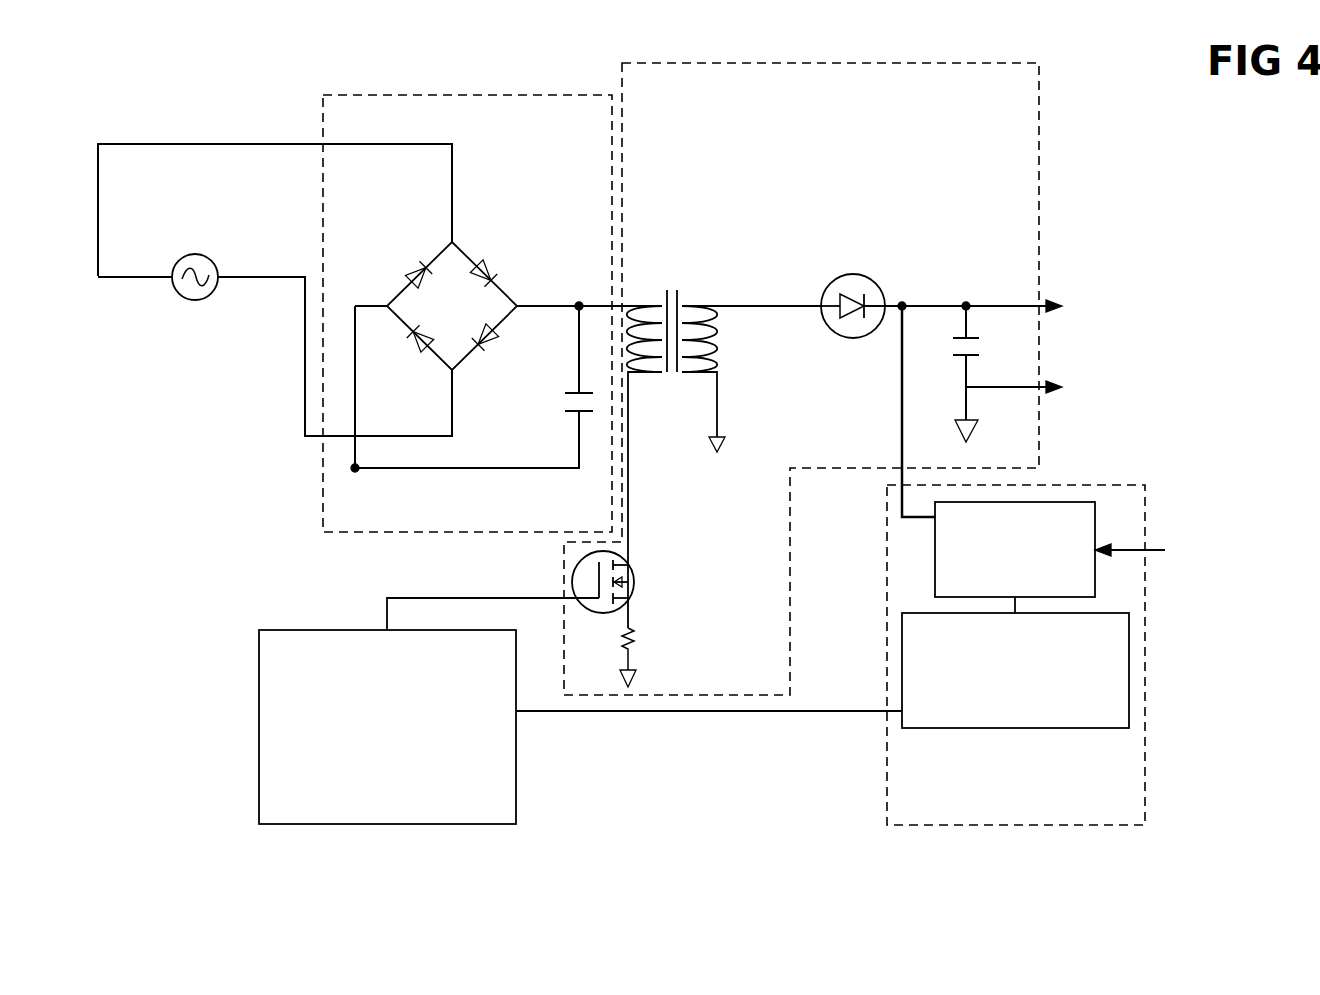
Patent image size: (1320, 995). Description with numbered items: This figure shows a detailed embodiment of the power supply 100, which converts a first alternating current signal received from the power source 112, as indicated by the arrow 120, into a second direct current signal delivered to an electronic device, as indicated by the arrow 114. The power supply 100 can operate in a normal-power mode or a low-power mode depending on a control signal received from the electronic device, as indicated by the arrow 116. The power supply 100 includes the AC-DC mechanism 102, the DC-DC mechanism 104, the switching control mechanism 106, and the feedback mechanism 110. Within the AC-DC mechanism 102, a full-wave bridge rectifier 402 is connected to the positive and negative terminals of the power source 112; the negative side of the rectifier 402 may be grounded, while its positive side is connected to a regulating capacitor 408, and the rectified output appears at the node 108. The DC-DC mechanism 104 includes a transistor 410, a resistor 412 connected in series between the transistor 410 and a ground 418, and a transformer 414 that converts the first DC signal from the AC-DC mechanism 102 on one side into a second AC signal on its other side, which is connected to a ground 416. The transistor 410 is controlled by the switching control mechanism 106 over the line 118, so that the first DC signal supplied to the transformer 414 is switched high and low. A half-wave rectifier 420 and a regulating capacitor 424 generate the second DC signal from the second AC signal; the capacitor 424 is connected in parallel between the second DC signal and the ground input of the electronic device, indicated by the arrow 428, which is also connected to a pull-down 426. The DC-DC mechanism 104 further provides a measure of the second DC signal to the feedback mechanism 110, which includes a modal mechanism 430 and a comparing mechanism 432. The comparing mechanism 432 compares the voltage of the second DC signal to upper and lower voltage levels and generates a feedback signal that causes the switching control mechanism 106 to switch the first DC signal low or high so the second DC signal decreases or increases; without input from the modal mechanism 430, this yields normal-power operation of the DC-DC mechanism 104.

The power supply 100 is at (255, 570).
The AC-DC mechanism 102 is at (586, 125).
The DC-DC mechanism 104 is at (1003, 116).
The switching control mechanism 106 is at (372, 764).
The rectified DC output node 108 is at (593, 304).
The feedback mechanism 110 is at (1134, 788).
The power source 112 is at (195, 254).
The arrow indicating second DC signal 114 is at (1028, 262).
The arrow indicating control signal 116 is at (1164, 563).
The switching control signal line 118 is at (436, 597).
The arrow indicating first AC signal 120 is at (213, 143).
The full-wave bridge rectifier 402 is at (437, 315).
The regulating capacitor 408 is at (566, 402).
The transistor 410 is at (637, 582).
The resistor 412 is at (637, 640).
The transformer 414 is at (695, 256).
The ground 416 is at (706, 444).
The ground 418 is at (641, 673).
The half-wave rectifier 420 is at (874, 345).
The regulating capacitor 424 is at (962, 352).
The pull-down 426 is at (948, 416).
The arrow indicating ground input 428 is at (1030, 347).
The modal mechanism 430 is at (1000, 585).
The comparing mechanism 432 is at (1000, 705).